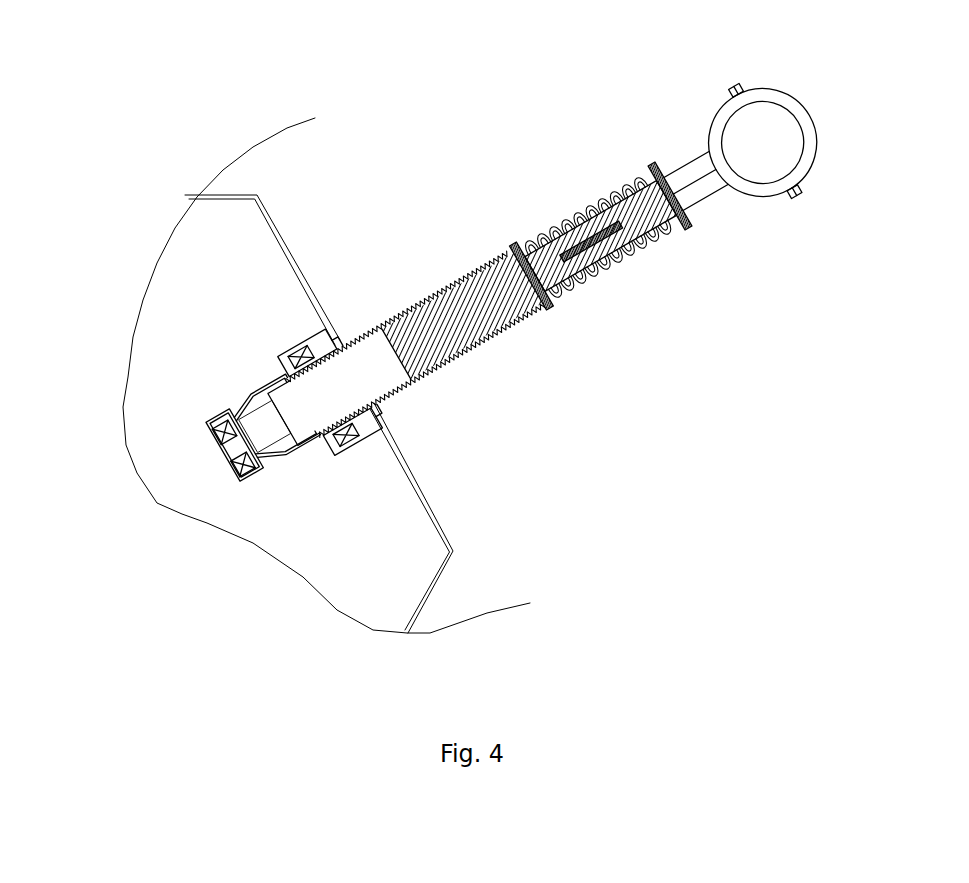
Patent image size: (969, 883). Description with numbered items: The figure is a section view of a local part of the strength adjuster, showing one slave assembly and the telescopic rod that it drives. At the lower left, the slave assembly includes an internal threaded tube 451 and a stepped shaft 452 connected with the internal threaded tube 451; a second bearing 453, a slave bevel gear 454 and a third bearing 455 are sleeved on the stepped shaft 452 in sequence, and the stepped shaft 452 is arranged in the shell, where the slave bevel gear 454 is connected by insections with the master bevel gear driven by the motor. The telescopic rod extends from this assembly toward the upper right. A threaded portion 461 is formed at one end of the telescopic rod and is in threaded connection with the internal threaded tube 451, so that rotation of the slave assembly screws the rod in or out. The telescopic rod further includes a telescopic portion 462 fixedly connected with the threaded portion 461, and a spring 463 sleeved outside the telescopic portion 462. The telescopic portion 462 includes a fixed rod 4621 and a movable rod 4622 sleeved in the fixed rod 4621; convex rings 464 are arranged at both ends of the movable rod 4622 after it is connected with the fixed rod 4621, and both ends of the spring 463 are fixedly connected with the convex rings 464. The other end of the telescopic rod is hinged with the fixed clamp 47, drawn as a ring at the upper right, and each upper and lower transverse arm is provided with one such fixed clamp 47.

The fixed clamp 47 is at (762, 94).
The internal threaded tube 451 is at (350, 341).
The stepped shaft 452 is at (285, 404).
The second bearing 453 is at (348, 433).
The slave bevel gear 454 is at (271, 440).
The third bearing 455 is at (228, 433).
The threaded portion 461 is at (460, 290).
The telescopic portion 462 is at (599, 258).
The fixed rod 4621 is at (543, 249).
The movable rod 4622 is at (636, 192).
The spring 463 is at (574, 293).
The convex ring 464 is at (690, 218).